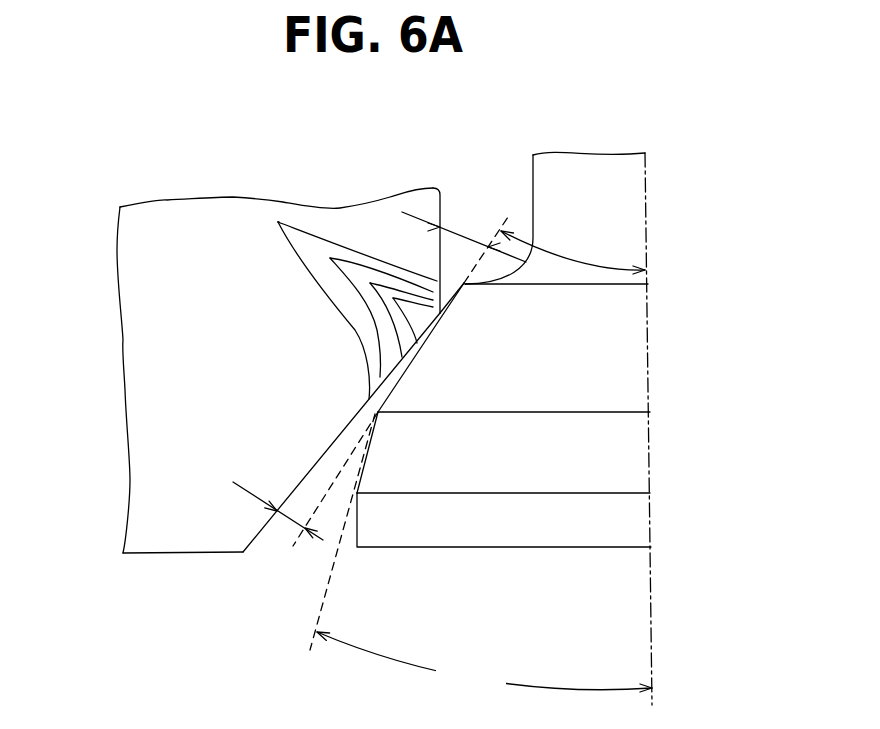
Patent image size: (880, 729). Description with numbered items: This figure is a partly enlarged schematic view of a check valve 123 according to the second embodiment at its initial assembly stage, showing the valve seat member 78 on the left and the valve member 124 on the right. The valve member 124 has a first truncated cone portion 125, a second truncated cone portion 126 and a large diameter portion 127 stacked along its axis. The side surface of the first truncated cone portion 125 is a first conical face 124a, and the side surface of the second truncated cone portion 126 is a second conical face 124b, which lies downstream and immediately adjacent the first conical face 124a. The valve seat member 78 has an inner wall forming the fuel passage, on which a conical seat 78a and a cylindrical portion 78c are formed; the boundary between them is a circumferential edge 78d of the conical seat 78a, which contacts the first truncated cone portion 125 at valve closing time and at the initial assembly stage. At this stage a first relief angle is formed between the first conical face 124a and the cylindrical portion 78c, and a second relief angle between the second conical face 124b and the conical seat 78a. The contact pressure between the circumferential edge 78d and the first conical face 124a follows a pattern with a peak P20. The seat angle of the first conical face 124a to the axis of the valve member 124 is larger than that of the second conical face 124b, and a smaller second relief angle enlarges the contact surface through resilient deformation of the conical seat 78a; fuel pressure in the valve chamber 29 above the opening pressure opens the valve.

The valve seat member 78 is at (160, 230).
The conical seat 78a is at (308, 474).
The cylindrical portion 78c is at (441, 192).
The circumferential edge 78d is at (443, 320).
The peak P20 is at (279, 220).
The valve chamber 29 is at (512, 197).
The check valve 123 is at (657, 240).
The valve member 124 is at (647, 257).
The first conical face 124a is at (385, 402).
The second conical face 124b is at (366, 457).
The first truncated cone portion 125 is at (630, 378).
The second truncated cone portion 126 is at (632, 463).
The large diameter portion 127 is at (633, 528).